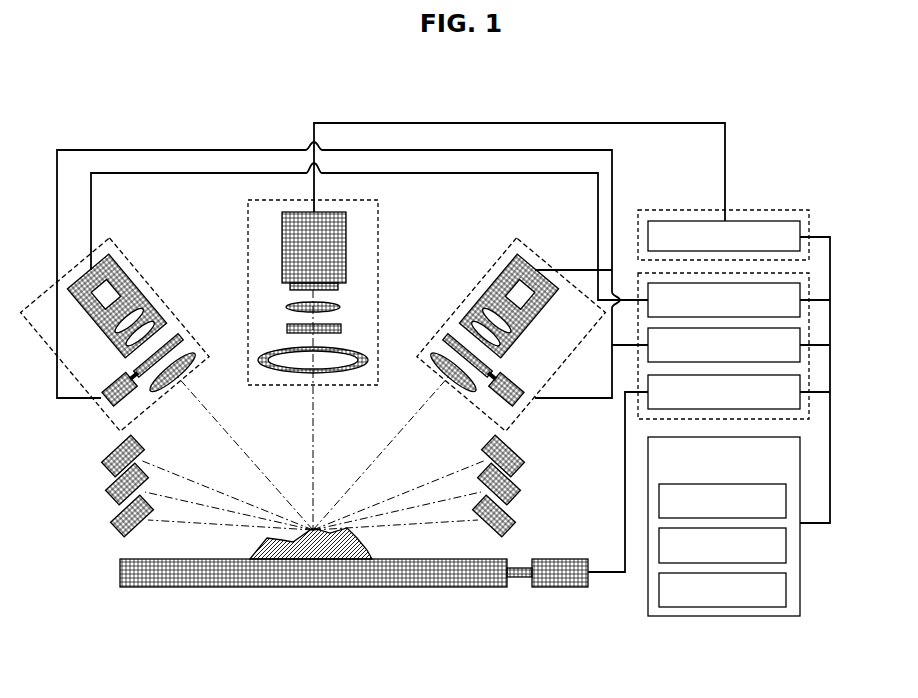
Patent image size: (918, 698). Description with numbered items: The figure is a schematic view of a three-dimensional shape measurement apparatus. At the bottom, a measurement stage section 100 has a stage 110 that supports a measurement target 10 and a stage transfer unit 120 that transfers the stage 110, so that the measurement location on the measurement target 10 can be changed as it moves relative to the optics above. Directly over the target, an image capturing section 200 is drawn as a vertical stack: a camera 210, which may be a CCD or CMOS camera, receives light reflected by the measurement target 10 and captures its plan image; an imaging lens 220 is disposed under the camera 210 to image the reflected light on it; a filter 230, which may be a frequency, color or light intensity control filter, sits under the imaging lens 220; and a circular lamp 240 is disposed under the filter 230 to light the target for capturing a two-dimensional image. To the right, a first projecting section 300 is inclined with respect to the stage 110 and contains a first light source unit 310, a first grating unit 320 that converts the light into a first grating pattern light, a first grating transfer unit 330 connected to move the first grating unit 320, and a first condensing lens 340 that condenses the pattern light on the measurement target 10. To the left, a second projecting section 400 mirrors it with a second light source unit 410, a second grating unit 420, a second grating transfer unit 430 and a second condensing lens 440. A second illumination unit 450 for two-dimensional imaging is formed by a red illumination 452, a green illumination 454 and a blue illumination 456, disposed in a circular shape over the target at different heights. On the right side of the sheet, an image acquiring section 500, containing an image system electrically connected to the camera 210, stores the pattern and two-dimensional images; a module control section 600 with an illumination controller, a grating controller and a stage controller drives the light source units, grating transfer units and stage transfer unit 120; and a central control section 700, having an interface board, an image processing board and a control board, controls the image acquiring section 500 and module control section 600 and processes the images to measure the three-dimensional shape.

The measurement target 10 is at (297, 561).
The measurement stage section 100 is at (354, 607).
The stage 110 is at (485, 574).
The stage transfer unit 120 is at (547, 595).
The image capturing section 200 is at (325, 319).
The camera 210 is at (283, 240).
The imaging lens 220 is at (340, 301).
The filter 230 is at (287, 327).
The lamp 240 is at (290, 386).
The first projecting section 300 is at (506, 327).
The first light source unit 310 is at (508, 253).
The first grating unit 320 is at (453, 335).
The first grating transfer unit 330 is at (488, 410).
The first condensing lens 340 is at (443, 352).
The second projecting section 400 is at (116, 343).
The second light source unit 410 is at (135, 263).
The second grating unit 420 is at (178, 340).
The second grating transfer unit 430 is at (135, 403).
The second condensing lens 440 is at (180, 395).
The second illumination unit 450 is at (315, 498).
The red illumination 452 is at (107, 470).
The green illumination 454 is at (112, 498).
The blue illumination 456 is at (54, 483).
The image acquiring section 500 is at (676, 210).
The module control section 600 is at (638, 408).
The central control section 700 is at (680, 617).